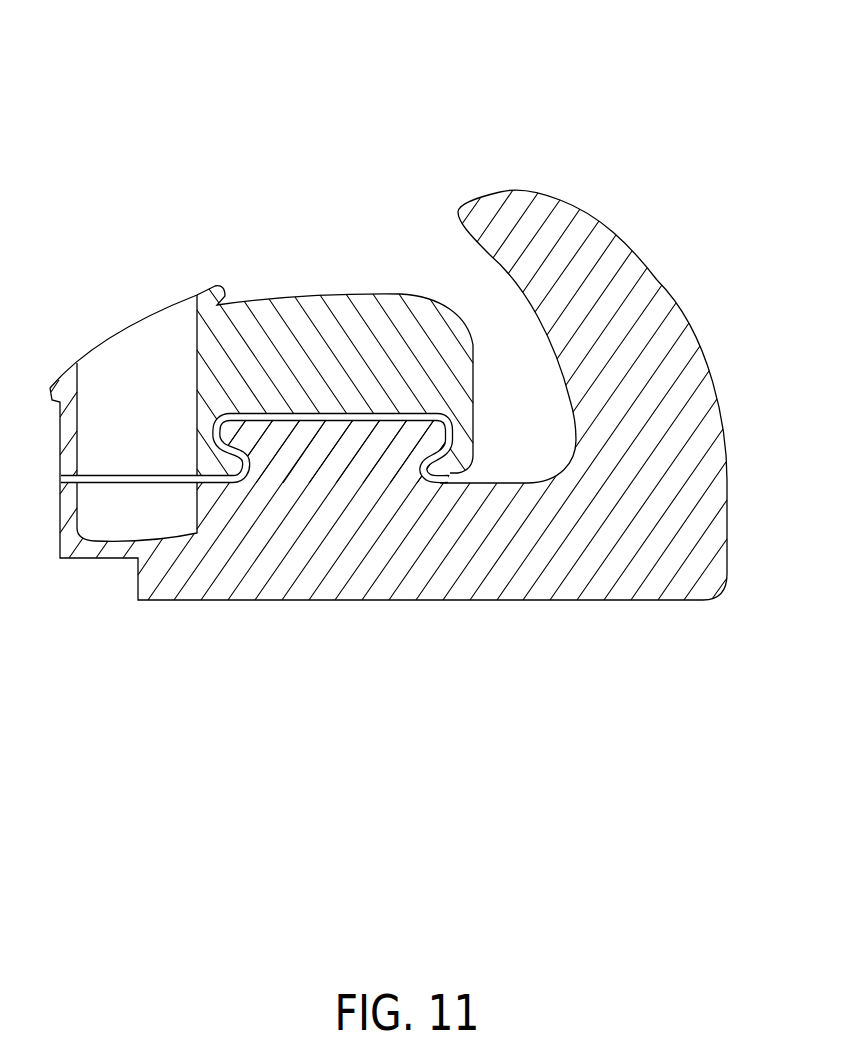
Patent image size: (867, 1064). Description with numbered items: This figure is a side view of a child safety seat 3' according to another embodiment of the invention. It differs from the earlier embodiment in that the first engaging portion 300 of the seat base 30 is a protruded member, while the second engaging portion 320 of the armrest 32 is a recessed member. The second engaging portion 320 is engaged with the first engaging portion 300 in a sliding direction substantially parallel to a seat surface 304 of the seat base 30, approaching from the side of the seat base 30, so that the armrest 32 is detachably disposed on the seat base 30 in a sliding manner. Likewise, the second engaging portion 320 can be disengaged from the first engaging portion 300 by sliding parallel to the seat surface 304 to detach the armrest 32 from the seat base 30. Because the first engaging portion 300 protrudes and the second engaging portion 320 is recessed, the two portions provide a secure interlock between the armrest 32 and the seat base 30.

The child safety seat 3' is at (714, 58).
The seat base 30 is at (377, 602).
The first engaging portion 300 is at (310, 420).
The seat surface 304 is at (508, 480).
The armrest 32 is at (280, 297).
The second engaging portion 320 is at (357, 412).